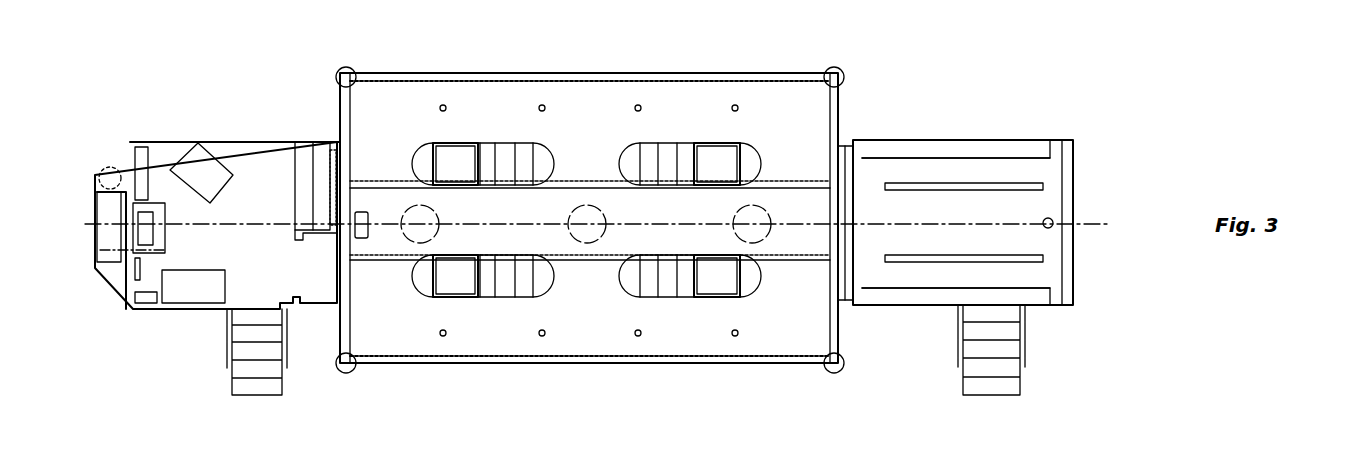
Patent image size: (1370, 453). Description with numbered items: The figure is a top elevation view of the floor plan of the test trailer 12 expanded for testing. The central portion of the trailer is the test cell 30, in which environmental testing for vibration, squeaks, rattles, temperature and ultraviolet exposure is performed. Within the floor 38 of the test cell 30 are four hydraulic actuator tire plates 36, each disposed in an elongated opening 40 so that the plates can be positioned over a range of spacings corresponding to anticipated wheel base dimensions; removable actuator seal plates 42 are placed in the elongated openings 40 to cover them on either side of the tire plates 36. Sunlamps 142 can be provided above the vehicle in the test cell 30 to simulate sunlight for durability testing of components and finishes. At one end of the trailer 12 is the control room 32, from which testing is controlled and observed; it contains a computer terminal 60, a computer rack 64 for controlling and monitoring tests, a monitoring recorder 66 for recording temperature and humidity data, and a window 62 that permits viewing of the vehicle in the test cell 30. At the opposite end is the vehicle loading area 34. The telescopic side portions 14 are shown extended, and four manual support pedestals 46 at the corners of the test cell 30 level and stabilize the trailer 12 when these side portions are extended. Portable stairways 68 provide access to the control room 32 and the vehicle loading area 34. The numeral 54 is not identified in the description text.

The test trailer 12 is at (890, 134).
The telescopic side portions 14 is at (584, 366).
The test cell 30 is at (754, 88).
The control room 32 is at (252, 157).
The vehicle loading area 34 is at (960, 166).
The hydraulic actuator tire plates 36 is at (452, 158).
The floor 38 is at (608, 88).
The elongated openings 40 is at (553, 166).
The removable actuator seal plates 42 is at (507, 158).
The manual support pedestals 46 is at (341, 370).
The slot 54 is at (1025, 254).
The computer terminal 60 is at (313, 162).
The window 62 is at (340, 168).
The computer rack 64 is at (190, 156).
The monitoring recorder 66 is at (148, 241).
The portable stairways 68 is at (237, 350).
The sunlamps 142 is at (593, 214).